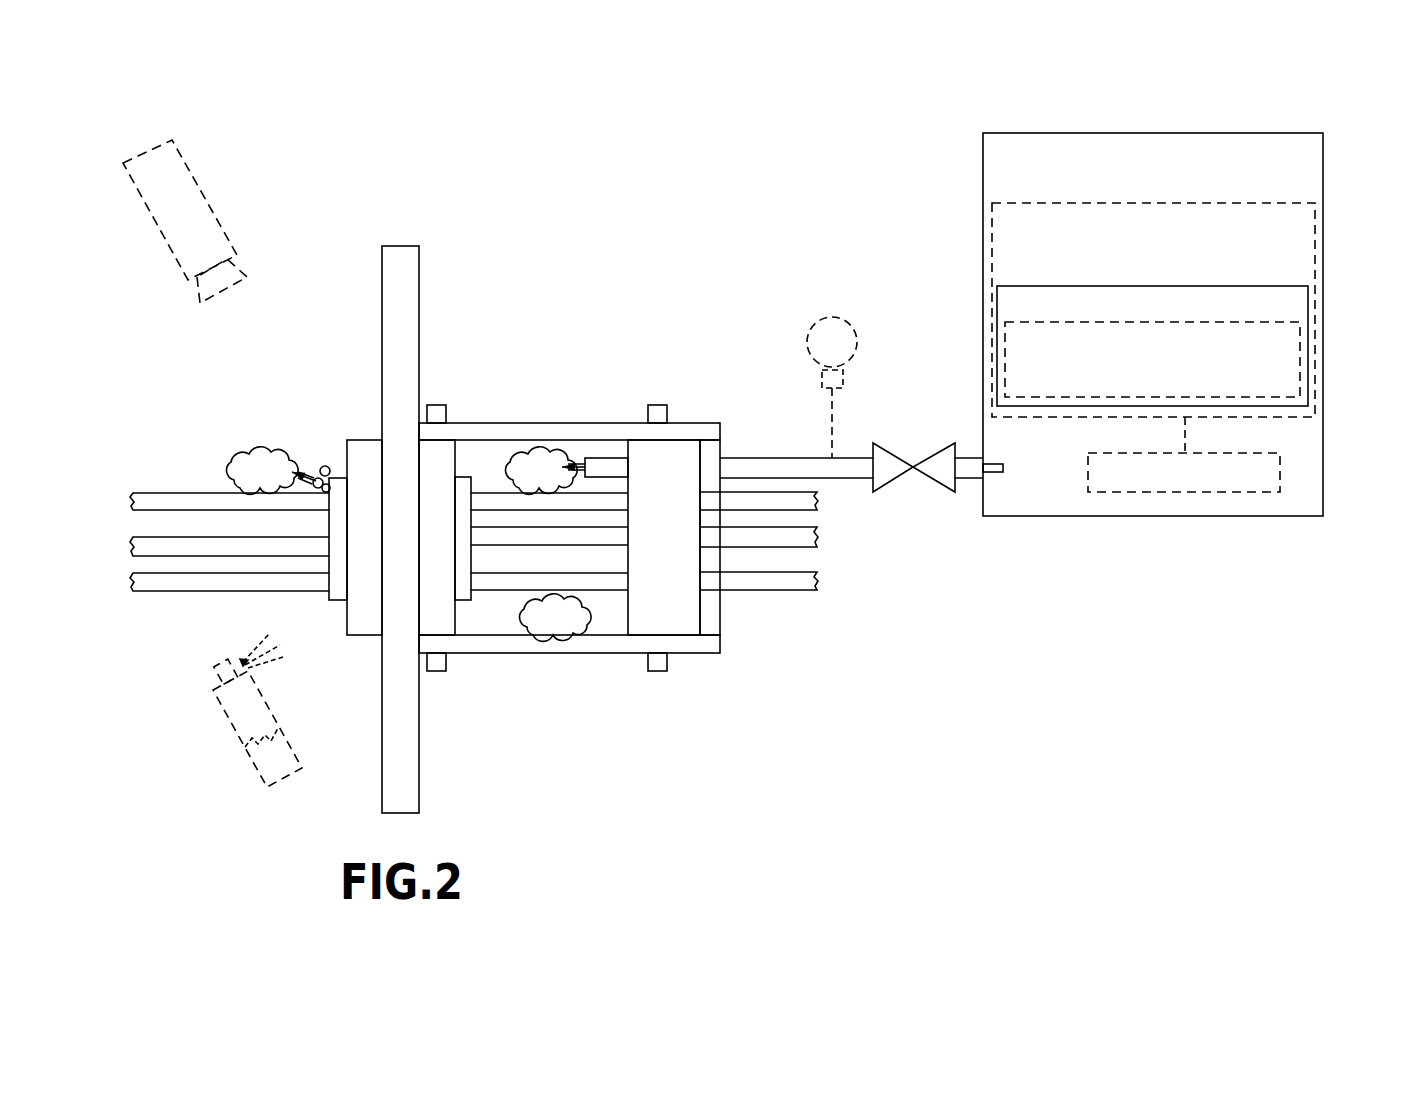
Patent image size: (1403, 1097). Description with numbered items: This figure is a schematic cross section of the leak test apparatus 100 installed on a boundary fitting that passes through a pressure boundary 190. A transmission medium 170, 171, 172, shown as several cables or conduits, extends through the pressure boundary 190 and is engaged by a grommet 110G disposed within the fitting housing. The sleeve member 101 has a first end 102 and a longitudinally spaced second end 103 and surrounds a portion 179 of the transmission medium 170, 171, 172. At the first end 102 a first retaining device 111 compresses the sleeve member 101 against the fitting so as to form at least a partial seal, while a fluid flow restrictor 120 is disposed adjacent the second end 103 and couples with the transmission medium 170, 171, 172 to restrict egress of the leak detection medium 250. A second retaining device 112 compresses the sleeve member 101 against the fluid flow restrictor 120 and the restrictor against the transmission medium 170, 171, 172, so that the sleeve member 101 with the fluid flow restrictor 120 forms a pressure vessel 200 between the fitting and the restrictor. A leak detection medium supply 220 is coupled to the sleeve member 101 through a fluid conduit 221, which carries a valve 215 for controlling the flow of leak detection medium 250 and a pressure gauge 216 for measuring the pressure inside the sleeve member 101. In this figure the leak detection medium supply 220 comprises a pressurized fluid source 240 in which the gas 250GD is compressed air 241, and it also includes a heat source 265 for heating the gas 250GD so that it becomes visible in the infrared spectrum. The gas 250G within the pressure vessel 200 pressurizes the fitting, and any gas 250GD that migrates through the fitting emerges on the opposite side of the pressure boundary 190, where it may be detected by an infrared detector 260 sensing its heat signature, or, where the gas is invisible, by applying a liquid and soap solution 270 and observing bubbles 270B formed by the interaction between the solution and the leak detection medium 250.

The leak test apparatus 100 is at (505, 226).
The sleeve member 101 is at (533, 422).
The first end 102 is at (405, 428).
The second end 103 is at (730, 423).
The grommet 110G is at (457, 458).
The first retaining device 111 is at (436, 405).
The second retaining device 112 is at (660, 405).
The fluid flow restrictor 120 is at (643, 628).
The transmission medium 170 is at (165, 493).
The transmission medium 171 is at (155, 537).
The transmission medium 172 is at (160, 591).
The portion of the transmission medium 179 is at (492, 608).
The pressure boundary 190 is at (398, 246).
The pressure vessel 200 is at (620, 390).
The valve 215 is at (944, 494).
The pressure gauge 216 is at (848, 322).
The leak detection medium supply 220 is at (1270, 133).
The fluid conduit 221 is at (843, 458).
The pressurized fluid source 240 is at (1317, 245).
The compressed air 241 is at (1312, 380).
The leak detection medium 250 is at (1310, 348).
The leak detection gas 250G is at (548, 452).
The gas leak detection medium 250GD is at (268, 452).
The infrared detector 260 is at (216, 216).
The heat source 265 is at (1280, 470).
The liquid and soap solution 270 is at (262, 780).
The bubbles 270B is at (321, 466).